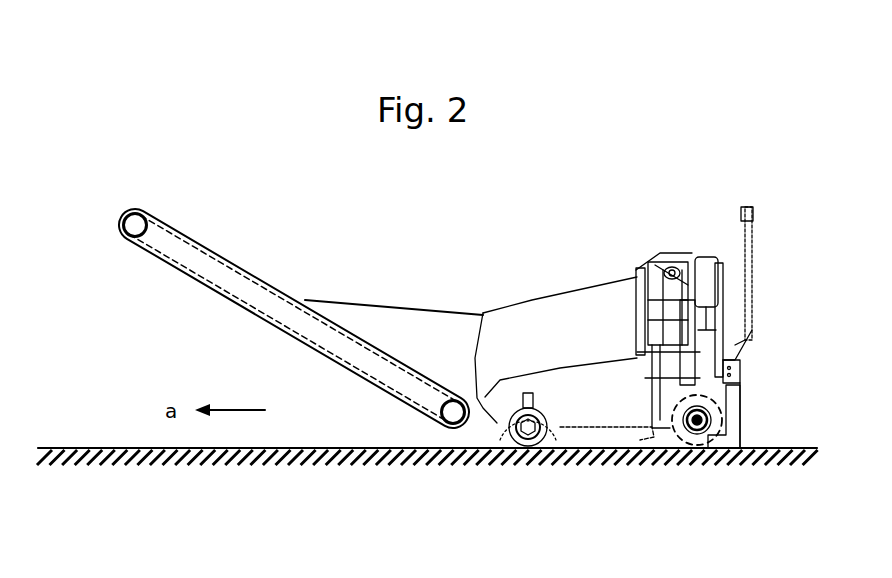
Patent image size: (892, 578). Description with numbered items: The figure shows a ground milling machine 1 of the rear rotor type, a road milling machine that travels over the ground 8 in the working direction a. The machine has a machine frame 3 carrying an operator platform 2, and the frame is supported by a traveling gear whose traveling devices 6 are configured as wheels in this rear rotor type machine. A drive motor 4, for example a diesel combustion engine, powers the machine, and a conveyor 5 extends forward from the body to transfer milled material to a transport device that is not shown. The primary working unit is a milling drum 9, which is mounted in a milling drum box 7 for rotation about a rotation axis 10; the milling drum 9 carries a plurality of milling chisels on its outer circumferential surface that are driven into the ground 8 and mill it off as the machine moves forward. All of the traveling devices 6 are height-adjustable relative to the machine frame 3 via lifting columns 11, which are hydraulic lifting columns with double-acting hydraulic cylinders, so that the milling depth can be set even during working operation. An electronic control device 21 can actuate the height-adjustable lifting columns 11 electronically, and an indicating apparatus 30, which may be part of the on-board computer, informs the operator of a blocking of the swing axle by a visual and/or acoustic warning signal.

The ground milling machine 1 is at (683, 148).
The operator platform 2 is at (666, 268).
The machine frame 3 is at (527, 350).
The drive motor 4 is at (565, 326).
The conveyor 5 is at (233, 283).
The traveling devices 6 is at (700, 408).
The milling drum box 7 is at (739, 431).
The ground 8 is at (173, 462).
The milling drum 9 is at (717, 438).
The rotation axis 10 is at (690, 432).
The lifting columns 11 is at (697, 383).
The electronic control device 21 is at (689, 266).
The indicating apparatus 30 is at (669, 268).